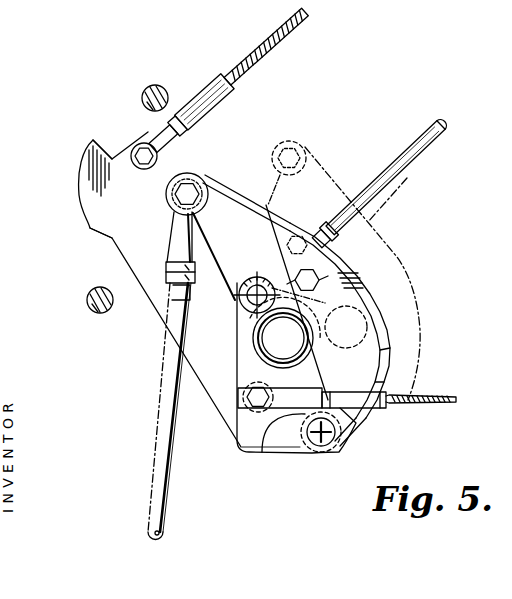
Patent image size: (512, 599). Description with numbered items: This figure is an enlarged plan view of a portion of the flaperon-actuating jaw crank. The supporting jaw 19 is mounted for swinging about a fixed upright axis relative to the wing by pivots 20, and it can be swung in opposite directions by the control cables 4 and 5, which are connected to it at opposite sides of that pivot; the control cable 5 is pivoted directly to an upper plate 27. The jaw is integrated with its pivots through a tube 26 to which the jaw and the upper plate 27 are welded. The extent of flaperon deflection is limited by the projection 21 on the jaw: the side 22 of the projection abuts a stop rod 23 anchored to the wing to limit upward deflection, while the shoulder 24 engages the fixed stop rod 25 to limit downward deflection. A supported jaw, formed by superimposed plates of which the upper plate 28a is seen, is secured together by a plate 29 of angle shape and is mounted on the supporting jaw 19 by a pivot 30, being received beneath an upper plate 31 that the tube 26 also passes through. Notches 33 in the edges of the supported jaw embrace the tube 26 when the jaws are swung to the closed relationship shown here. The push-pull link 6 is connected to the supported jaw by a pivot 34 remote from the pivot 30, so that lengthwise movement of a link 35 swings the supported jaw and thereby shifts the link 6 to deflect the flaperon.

The control cable 4 is at (266, 47).
The control cable 5 is at (446, 395).
The push-pull link 6 is at (153, 503).
The supporting jaw 19 is at (158, 288).
The pivots 20 is at (262, 290).
The projection 21 is at (82, 163).
The side of projection 22 is at (88, 228).
The stop rod 23 is at (92, 310).
The shoulder 24 is at (110, 155).
The stop rod 25 is at (148, 86).
The tube 26 is at (240, 336).
The upper plate 27 is at (268, 350).
The upper plate of supported jaw 28a is at (370, 337).
The angle plate 29 is at (382, 367).
The pivot 30 is at (338, 452).
The upper plate 31 is at (262, 456).
The notches 33 is at (418, 278).
The pivot 34 is at (191, 188).
The link 35 is at (410, 145).